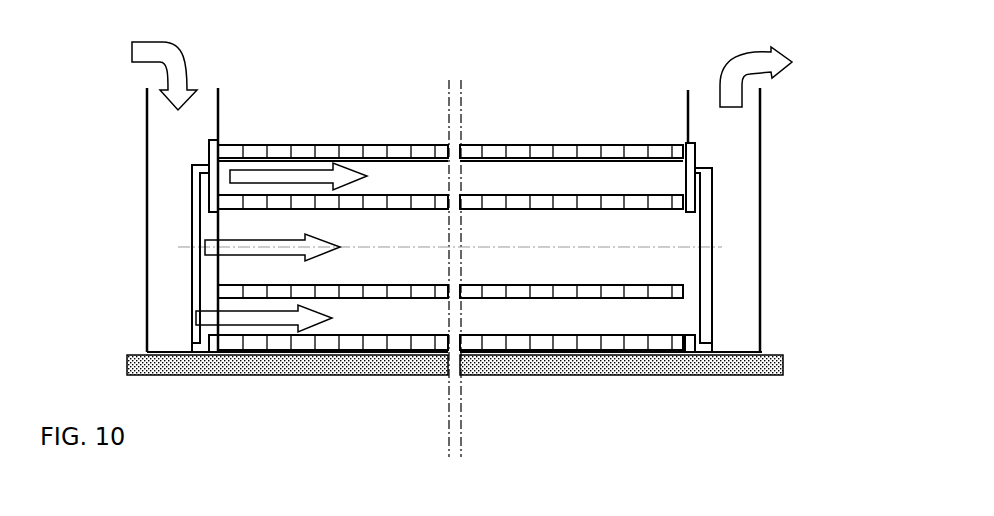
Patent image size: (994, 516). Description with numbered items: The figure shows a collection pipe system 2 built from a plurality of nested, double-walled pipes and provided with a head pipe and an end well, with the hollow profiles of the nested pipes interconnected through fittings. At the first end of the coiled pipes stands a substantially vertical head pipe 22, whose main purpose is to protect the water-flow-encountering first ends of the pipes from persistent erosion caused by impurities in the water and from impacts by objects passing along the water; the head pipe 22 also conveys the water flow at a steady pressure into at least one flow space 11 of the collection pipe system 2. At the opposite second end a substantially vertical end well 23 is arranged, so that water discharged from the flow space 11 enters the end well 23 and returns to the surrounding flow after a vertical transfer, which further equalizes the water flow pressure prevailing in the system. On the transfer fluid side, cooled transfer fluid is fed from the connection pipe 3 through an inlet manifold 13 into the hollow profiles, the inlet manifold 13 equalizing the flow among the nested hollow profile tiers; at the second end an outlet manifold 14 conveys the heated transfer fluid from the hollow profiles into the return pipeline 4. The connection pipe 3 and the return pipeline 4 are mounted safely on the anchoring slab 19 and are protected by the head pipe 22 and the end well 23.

The collection pipe system 2 is at (378, 118).
The connection pipe 3 is at (192, 215).
The return pipeline 4 is at (708, 280).
The flow space 11 is at (521, 187).
The inlet manifold 13 is at (212, 152).
The outlet manifold 14 is at (695, 152).
The anchoring slab 19 is at (270, 370).
The head pipe 22 is at (147, 134).
The end well 23 is at (762, 115).